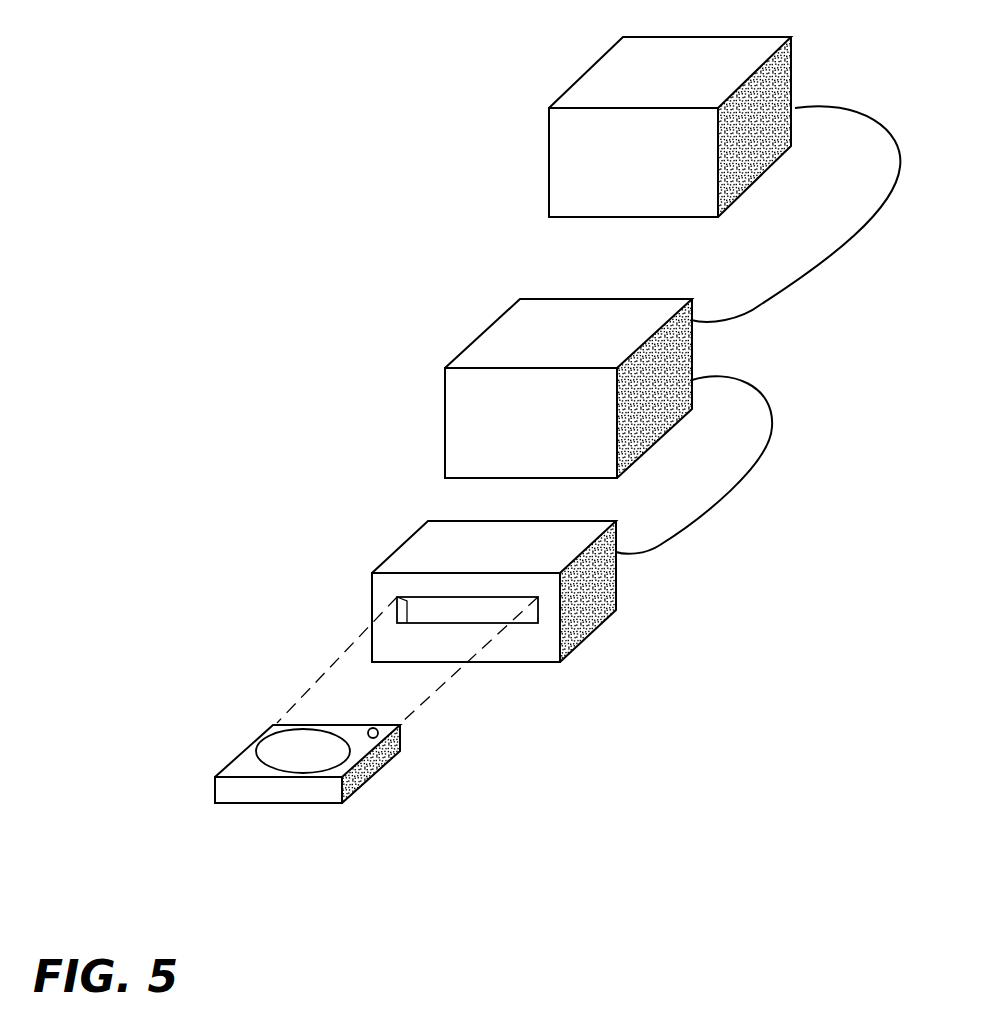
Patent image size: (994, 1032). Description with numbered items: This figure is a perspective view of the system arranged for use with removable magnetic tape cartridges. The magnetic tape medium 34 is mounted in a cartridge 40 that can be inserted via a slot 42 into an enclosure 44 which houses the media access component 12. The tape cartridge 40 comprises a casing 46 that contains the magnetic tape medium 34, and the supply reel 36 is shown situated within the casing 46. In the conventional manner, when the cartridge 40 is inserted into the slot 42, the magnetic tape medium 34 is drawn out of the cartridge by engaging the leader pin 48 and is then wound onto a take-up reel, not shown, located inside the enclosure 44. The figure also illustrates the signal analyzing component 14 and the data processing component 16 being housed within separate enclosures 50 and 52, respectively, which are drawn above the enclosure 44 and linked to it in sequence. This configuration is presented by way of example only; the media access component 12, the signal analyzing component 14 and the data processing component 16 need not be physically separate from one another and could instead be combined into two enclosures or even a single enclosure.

The media access component 12 is at (423, 656).
The signal analyzing component 14 is at (520, 437).
The data processing component 16 is at (623, 176).
The magnetic tape medium 34 is at (358, 752).
The supply reel 36 is at (257, 752).
The cartridge 40 is at (315, 775).
The slot 42 is at (535, 622).
The enclosure 44 is at (466, 630).
The casing 46 is at (263, 787).
The leader pin 48 is at (380, 733).
The enclosure 50 is at (556, 378).
The enclosure 52 is at (650, 124).